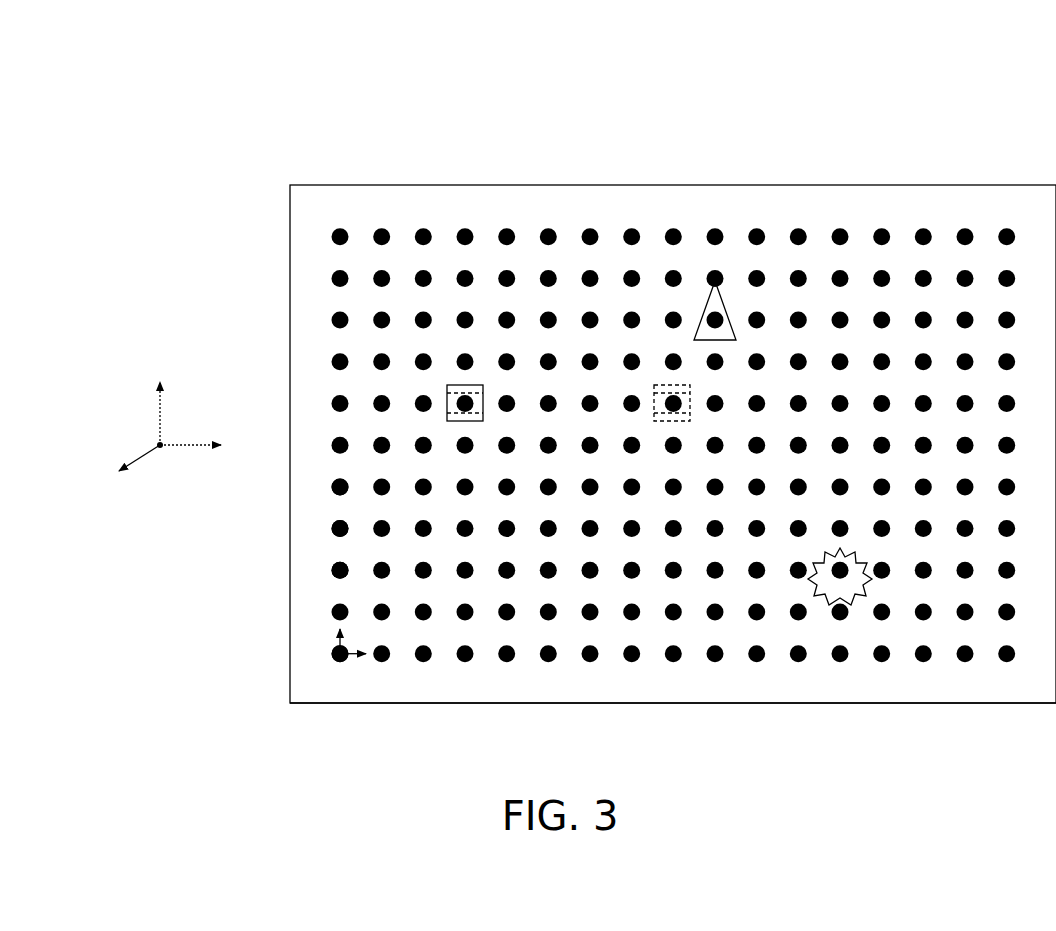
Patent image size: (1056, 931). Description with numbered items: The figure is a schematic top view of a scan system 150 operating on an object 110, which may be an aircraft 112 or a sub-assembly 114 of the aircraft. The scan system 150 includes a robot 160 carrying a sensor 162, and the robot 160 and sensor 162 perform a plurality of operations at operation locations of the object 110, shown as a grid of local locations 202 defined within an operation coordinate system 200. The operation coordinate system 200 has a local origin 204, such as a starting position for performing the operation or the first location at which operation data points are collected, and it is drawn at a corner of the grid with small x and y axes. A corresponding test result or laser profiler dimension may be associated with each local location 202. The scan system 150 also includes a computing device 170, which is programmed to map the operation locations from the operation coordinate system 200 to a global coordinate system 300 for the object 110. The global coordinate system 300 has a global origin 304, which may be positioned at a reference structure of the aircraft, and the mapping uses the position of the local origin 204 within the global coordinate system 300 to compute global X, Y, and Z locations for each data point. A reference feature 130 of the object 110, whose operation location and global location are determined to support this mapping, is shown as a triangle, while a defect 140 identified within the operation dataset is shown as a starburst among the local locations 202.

The object 110 is at (507, 705).
The aircraft 112 is at (620, 705).
The sub-assembly 114 is at (733, 705).
The reference feature 130 is at (716, 283).
The defect 140 is at (843, 595).
The scan system 150 is at (230, 93).
The robot 160 is at (483, 383).
The sensor 162 is at (447, 413).
The computing device 170 is at (447, 393).
The operation coordinate system 200 is at (318, 577).
The local locations 202 is at (331, 487).
The local origin 204 is at (333, 657).
The global coordinate system 300 is at (158, 492).
The global origin 304 is at (156, 441).